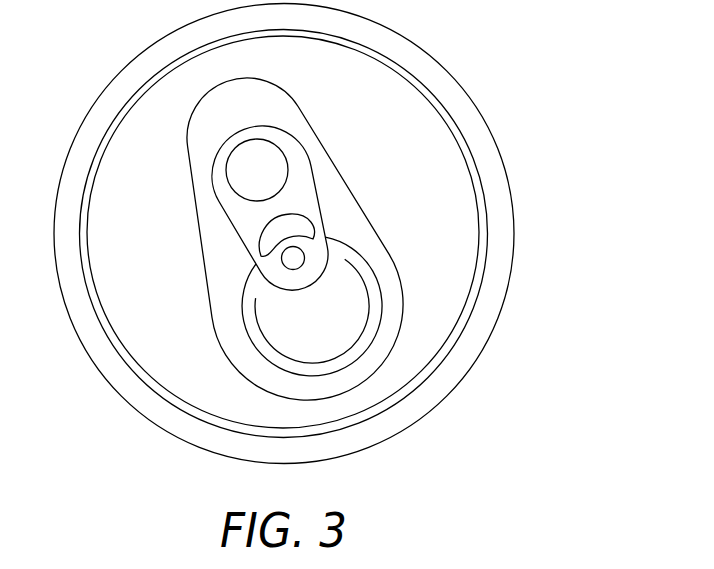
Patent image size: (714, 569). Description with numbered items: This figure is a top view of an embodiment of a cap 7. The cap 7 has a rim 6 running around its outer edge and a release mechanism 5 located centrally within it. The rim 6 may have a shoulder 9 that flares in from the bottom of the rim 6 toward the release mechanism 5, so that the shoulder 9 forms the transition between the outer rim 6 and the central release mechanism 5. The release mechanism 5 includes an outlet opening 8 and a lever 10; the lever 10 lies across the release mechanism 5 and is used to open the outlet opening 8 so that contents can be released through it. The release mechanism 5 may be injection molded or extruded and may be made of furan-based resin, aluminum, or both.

The release mechanism 5 is at (413, 128).
The rim 6 is at (483, 319).
The cap 7 is at (335, 234).
The outlet opening 8 is at (325, 310).
The shoulder 9 is at (121, 373).
The lever 10 is at (225, 149).